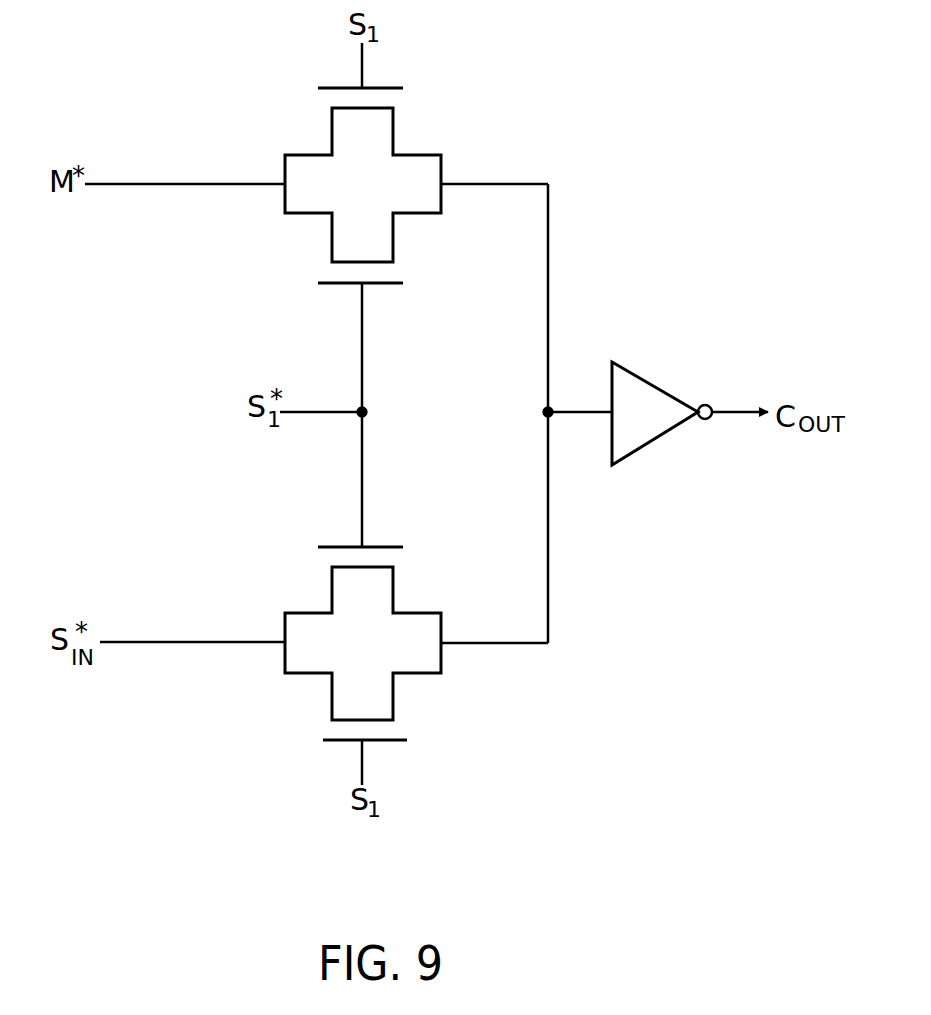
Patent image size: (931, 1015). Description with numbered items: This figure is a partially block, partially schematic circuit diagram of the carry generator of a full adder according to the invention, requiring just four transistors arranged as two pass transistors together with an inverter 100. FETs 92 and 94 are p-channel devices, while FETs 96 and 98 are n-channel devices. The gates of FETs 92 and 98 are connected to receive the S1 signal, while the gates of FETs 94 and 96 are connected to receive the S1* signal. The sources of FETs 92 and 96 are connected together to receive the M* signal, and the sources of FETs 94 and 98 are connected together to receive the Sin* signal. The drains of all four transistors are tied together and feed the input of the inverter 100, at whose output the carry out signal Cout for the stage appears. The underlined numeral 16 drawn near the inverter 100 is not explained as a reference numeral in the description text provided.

The FET 92 is at (431, 131).
The FET 94 is at (421, 233).
The FET 96 is at (422, 596).
The FET 98 is at (418, 691).
The inverter 100 is at (667, 390).
The carry output circuit 16 is at (663, 556).